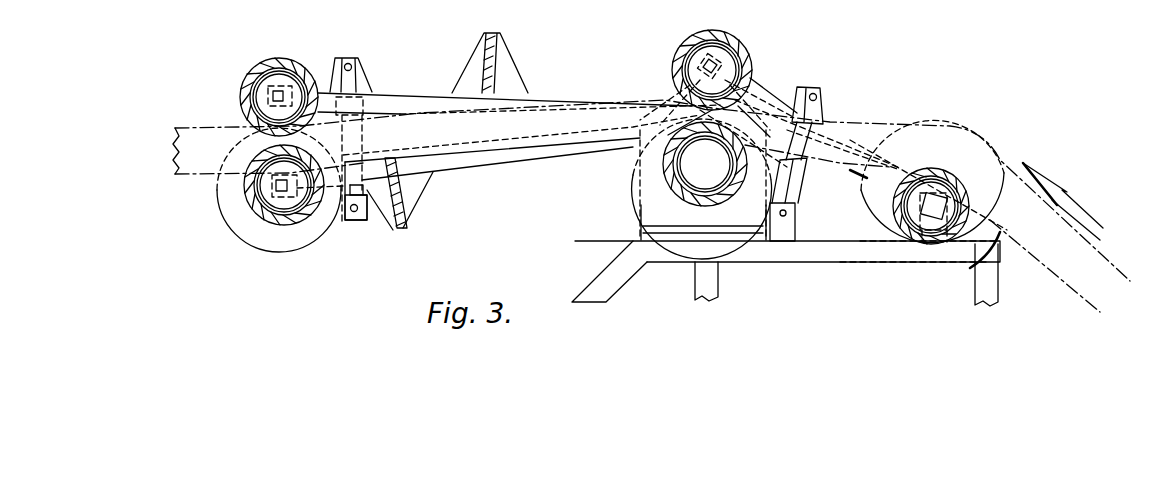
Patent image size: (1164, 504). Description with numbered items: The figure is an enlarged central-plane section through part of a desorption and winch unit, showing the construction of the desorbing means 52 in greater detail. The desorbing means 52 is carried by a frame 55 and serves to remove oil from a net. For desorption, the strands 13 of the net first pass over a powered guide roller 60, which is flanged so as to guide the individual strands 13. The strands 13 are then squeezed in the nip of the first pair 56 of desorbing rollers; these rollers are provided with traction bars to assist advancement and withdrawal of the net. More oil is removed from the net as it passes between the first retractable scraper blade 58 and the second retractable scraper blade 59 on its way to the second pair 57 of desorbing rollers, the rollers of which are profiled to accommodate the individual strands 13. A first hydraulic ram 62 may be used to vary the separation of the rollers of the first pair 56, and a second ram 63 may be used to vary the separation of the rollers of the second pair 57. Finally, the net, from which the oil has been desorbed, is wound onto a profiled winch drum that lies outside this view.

The strands 13 is at (199, 119).
The desorbing means 52 is at (834, 75).
The frame 55 is at (861, 256).
The first pair of desorbing rollers 56 is at (678, 51).
The second pair of desorbing rollers 57 is at (285, 60).
The first retractable scraper blade 58 is at (497, 50).
The second retractable scraper blade 59 is at (405, 227).
The powered guide roller 60 is at (933, 175).
The first hydraulic ram 62 is at (802, 185).
The second ram 63 is at (366, 221).